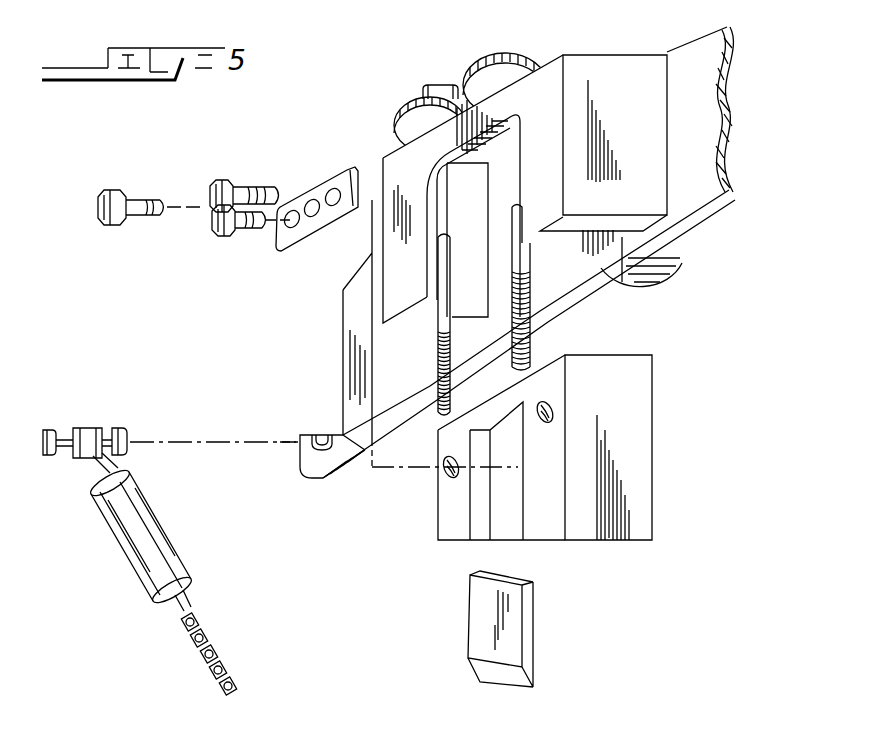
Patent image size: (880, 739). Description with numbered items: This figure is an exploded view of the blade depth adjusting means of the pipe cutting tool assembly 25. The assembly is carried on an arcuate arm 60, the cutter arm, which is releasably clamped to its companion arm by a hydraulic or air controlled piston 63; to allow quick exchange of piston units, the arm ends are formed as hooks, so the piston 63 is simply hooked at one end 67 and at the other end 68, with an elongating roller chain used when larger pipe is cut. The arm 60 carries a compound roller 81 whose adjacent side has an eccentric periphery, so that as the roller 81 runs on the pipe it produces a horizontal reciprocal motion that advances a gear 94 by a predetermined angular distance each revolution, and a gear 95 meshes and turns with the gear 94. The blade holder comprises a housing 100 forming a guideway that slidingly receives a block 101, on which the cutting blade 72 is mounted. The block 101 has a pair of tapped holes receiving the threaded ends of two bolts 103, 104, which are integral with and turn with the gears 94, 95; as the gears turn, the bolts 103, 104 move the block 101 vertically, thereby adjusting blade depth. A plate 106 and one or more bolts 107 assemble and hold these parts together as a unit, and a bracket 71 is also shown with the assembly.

The pipe cutting tool assembly 25 is at (640, 17).
The arcuate arm 60 is at (708, 110).
The piston 63 is at (165, 556).
The hook end 67 is at (304, 432).
The hook end 68 is at (222, 658).
The bracket 71 is at (380, 146).
The blade 72 is at (527, 640).
The compound roller 81 is at (680, 252).
The gear 94 is at (412, 108).
The gear 95 is at (508, 60).
The housing 100 is at (657, 113).
The block 101 is at (646, 431).
The bolt 103 is at (446, 401).
The bolt 104 is at (535, 347).
The plate 106 is at (297, 247).
The bolts 107 is at (258, 176).